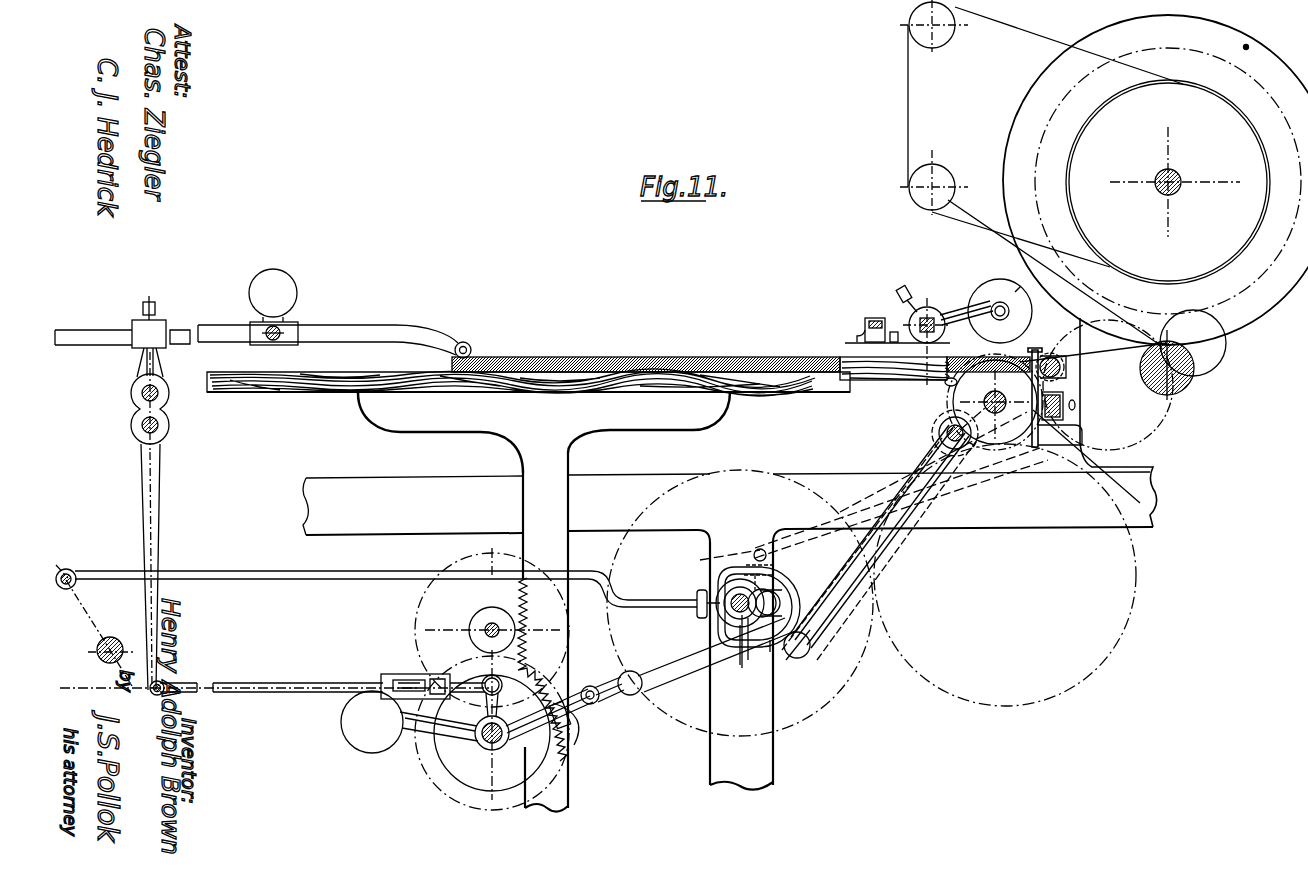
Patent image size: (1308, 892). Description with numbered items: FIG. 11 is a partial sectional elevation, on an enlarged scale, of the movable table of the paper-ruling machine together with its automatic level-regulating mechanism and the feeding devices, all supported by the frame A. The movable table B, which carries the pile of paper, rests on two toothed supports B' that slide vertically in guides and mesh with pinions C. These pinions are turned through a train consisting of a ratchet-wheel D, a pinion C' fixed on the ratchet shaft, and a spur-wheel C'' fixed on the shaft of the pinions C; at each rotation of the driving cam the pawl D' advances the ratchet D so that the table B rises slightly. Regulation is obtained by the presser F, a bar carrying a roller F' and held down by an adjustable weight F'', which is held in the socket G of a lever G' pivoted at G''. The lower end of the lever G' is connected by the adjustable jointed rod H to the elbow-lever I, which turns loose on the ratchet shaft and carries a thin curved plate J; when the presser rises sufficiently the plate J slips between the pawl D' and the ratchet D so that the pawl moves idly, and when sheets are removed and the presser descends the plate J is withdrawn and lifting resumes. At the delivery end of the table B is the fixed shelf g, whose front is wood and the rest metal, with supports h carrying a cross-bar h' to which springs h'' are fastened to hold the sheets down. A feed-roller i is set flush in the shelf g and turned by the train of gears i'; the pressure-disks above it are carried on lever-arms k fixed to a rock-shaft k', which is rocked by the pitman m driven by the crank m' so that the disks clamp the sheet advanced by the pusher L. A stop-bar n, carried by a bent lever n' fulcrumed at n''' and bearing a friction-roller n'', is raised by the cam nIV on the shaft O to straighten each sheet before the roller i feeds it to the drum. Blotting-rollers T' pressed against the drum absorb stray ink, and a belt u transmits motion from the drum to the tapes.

The frame A is at (728, 602).
The movable table B is at (528, 391).
The toothed supports B' is at (533, 668).
The pinions C is at (492, 623).
The pinion C' is at (485, 743).
The spur-wheel C'' is at (481, 627).
The ratchet-wheel D is at (492, 731).
The pawl D' is at (565, 704).
The presser F is at (314, 328).
The roller F' is at (466, 340).
The weight F'' is at (273, 307).
The socket G is at (110, 322).
The lever G' is at (164, 567).
The pivot G'' is at (140, 399).
The jointed rod H is at (262, 688).
The elbow-lever I is at (500, 693).
The curved plate J is at (585, 718).
The pusher L is at (792, 592).
The connecting rod M is at (302, 575).
The shaft O is at (734, 592).
The blotting-rollers T' is at (1087, 310).
The fixed shelf g is at (883, 376).
The supports h is at (897, 351).
The cross-bar h' is at (871, 320).
The springs h'' is at (899, 331).
The feed-roller i is at (986, 402).
The train of gears i' is at (890, 528).
The lever-arms k is at (966, 312).
The rock-shaft k' is at (923, 334).
The roller wheel l is at (1006, 311).
The pitman m is at (874, 486).
The crank m' is at (759, 556).
The stop-bar n is at (1055, 393).
The bent lever n' is at (913, 542).
The friction-roller n'' is at (808, 646).
The fulcrum n''' is at (956, 437).
The cam nIV is at (751, 645).
The drum wheel q is at (1155, 180).
The belt u is at (908, 118).